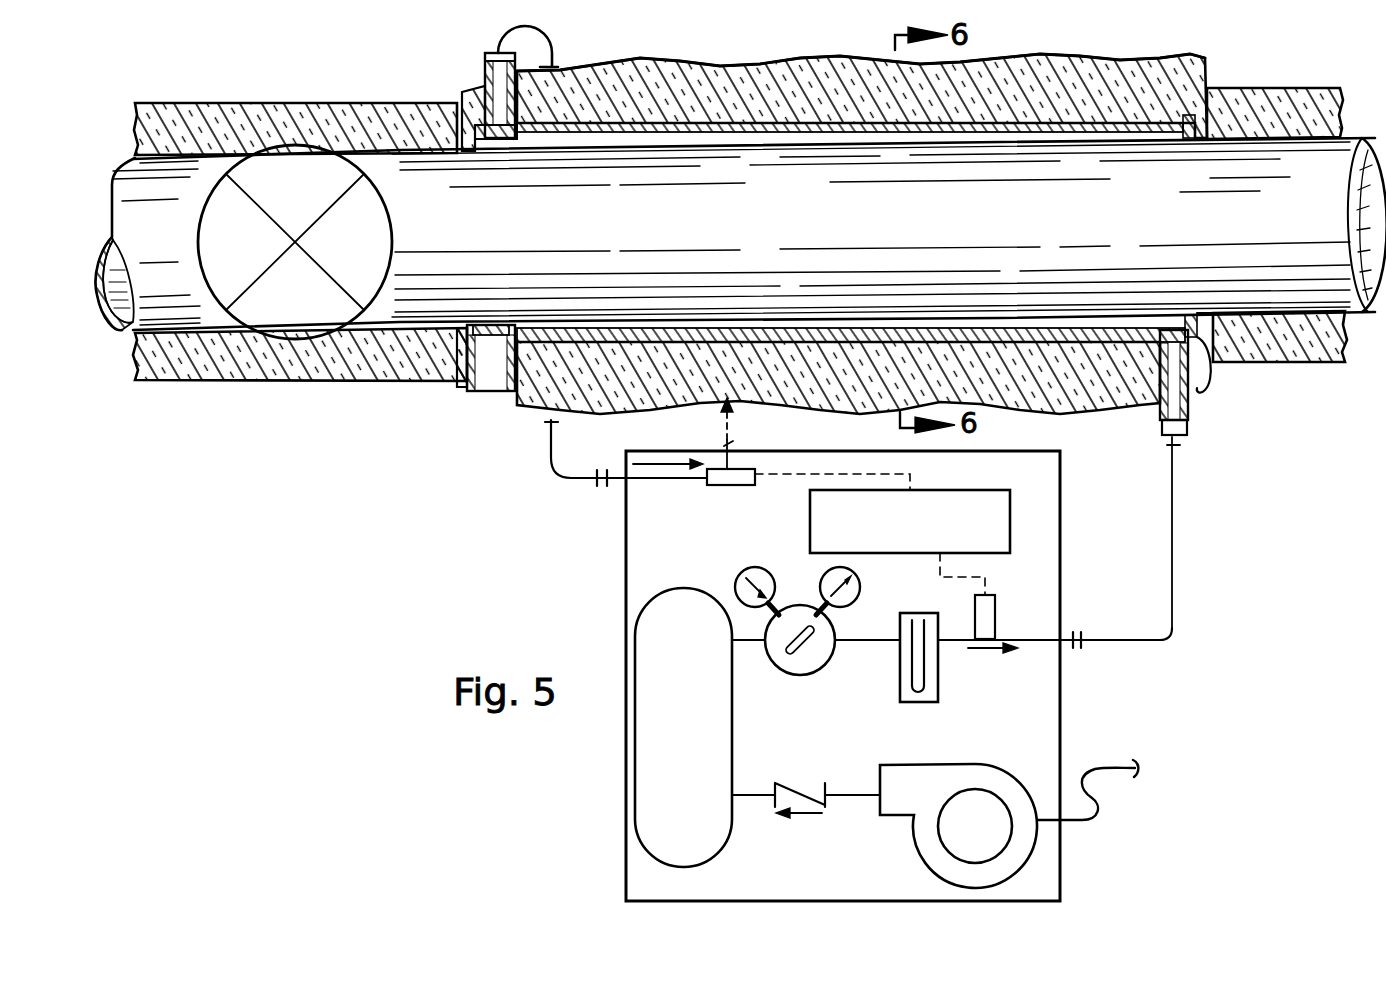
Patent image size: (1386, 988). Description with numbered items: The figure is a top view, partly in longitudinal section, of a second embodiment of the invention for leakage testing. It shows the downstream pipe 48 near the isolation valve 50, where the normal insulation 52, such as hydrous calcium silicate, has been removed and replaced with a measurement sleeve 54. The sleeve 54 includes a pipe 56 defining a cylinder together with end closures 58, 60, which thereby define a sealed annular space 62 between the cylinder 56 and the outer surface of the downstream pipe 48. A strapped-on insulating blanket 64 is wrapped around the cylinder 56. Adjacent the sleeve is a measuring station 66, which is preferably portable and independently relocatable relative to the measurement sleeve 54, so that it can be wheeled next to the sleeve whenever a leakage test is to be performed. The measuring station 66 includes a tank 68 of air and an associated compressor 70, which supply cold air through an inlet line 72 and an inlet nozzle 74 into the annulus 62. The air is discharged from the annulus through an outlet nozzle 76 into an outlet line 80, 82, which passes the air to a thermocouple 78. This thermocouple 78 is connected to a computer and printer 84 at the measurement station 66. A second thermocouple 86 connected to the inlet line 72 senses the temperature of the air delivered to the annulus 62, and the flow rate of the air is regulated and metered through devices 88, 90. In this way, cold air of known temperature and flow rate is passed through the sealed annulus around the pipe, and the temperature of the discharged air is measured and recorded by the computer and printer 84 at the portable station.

The downstream pipe 48 is at (373, 163).
The isolation valve 50 is at (294, 160).
The normal insulation 52 is at (240, 88).
The measurement sleeve 54 is at (862, 56).
The pipe 56 is at (524, 330).
The end closure 58 is at (470, 340).
The end closure 60 is at (1212, 325).
The sealed annular space 62 is at (490, 360).
The strapped-on insulating blanket 64 is at (731, 56).
The measuring station 66 is at (1072, 511).
The tank 68 is at (733, 728).
The compressor 70 is at (983, 765).
The inlet line 72 is at (1172, 603).
The inlet nozzle 74 is at (1160, 425).
The outlet nozzle 76 is at (486, 53).
The thermocouple 78 is at (710, 483).
The outlet line 80 is at (496, 44).
The outlet line 82 is at (552, 43).
The computer and printer 84 is at (949, 491).
The thermocouple 86 is at (975, 612).
The flow regulating device 88 is at (828, 664).
The flow metering device 90 is at (938, 668).